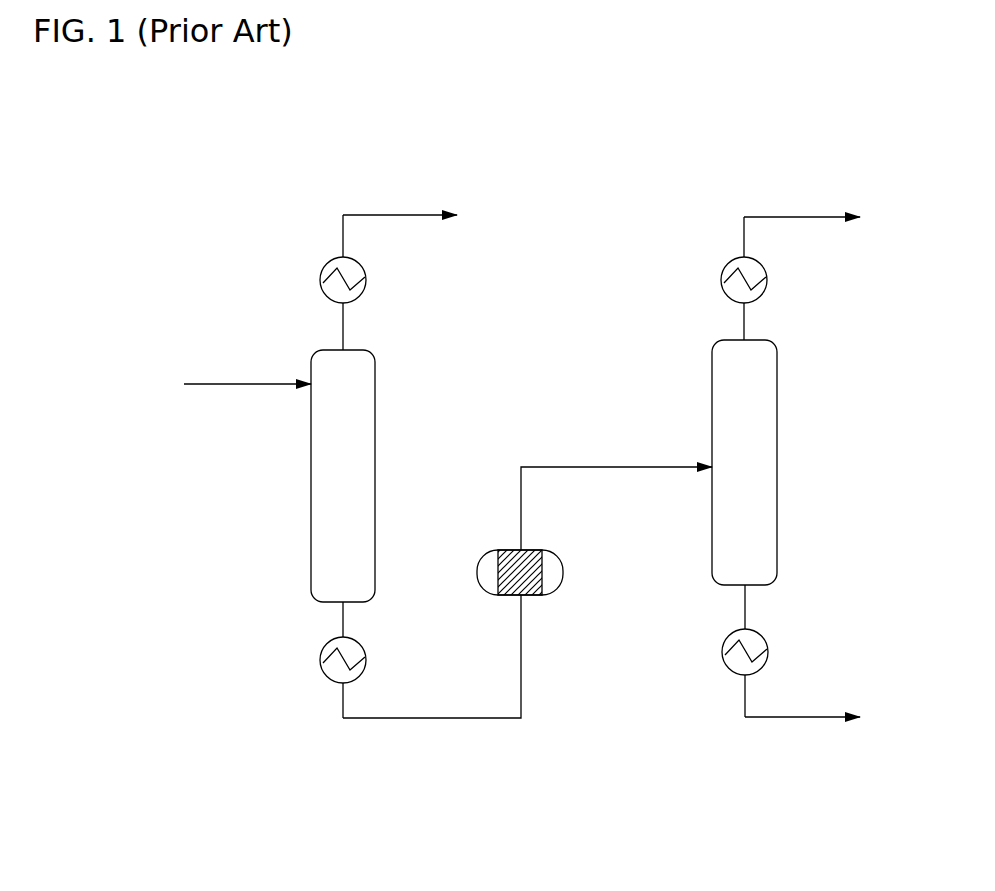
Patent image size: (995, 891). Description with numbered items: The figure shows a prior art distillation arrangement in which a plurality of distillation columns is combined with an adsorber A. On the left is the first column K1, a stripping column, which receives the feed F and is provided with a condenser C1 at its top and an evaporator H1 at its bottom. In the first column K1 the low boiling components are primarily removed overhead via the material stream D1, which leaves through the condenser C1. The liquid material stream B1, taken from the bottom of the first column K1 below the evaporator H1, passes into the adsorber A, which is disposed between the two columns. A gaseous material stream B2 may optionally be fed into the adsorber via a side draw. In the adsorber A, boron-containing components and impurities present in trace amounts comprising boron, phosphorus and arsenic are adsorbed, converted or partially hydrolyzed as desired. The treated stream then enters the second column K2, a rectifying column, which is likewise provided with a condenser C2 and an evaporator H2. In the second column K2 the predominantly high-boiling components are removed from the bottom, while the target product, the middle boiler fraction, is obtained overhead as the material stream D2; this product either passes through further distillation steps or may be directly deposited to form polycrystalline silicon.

The first column K1 is at (343, 476).
The second column K2 is at (744, 462).
The condenser C1 is at (321, 282).
The condenser C2 is at (720, 278).
The evaporator H1 is at (321, 660).
The evaporator H2 is at (764, 651).
The adsorber A is at (594, 550).
The feed stream F is at (247, 373).
The material stream D1 is at (400, 196).
The material stream D2 is at (802, 197).
The liquid material stream B1 is at (432, 679).
The gaseous material stream B2 is at (802, 740).